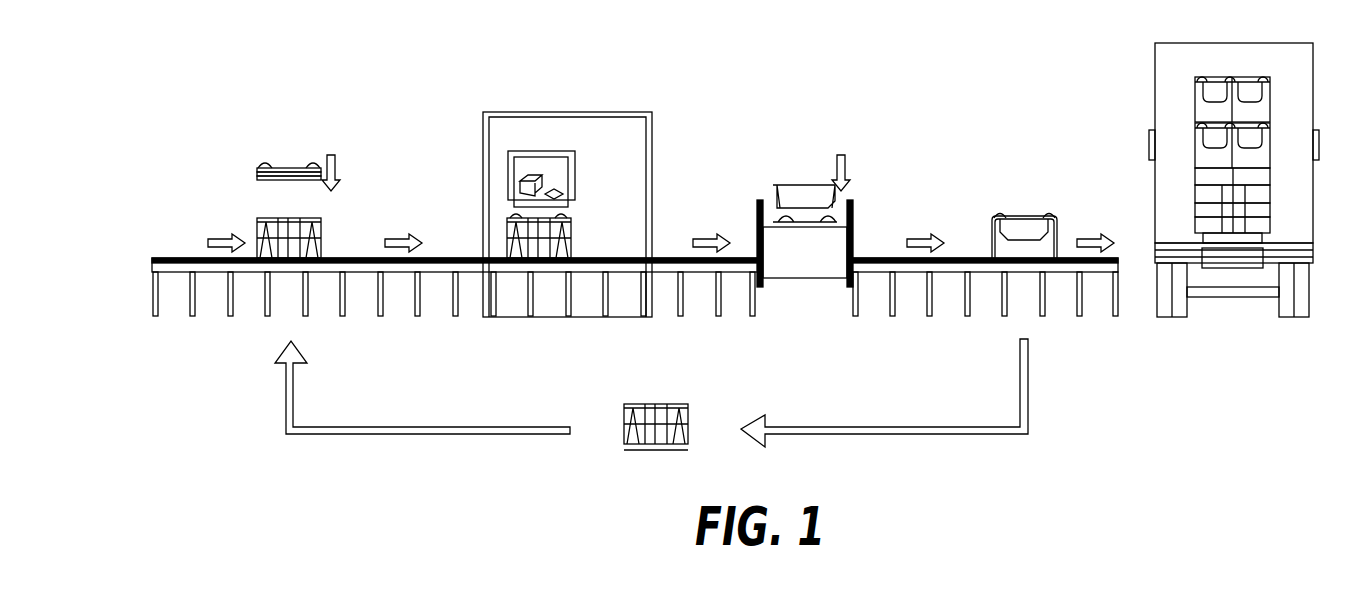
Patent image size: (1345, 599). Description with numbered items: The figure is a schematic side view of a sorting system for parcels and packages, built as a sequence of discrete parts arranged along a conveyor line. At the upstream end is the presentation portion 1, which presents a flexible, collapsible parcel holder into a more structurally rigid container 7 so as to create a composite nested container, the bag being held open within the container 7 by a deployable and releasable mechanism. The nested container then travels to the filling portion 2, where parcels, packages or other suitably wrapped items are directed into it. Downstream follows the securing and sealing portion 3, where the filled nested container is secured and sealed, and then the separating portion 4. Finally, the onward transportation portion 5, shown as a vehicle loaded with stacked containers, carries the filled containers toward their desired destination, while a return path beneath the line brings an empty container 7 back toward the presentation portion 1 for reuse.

The presentation portion 1 is at (257, 172).
The filling portion 2 is at (531, 174).
The securing and sealing portion 3 is at (805, 195).
The separating portion 4 is at (1022, 230).
The onward transportation portion 5 is at (1210, 158).
The container 7 is at (650, 452).